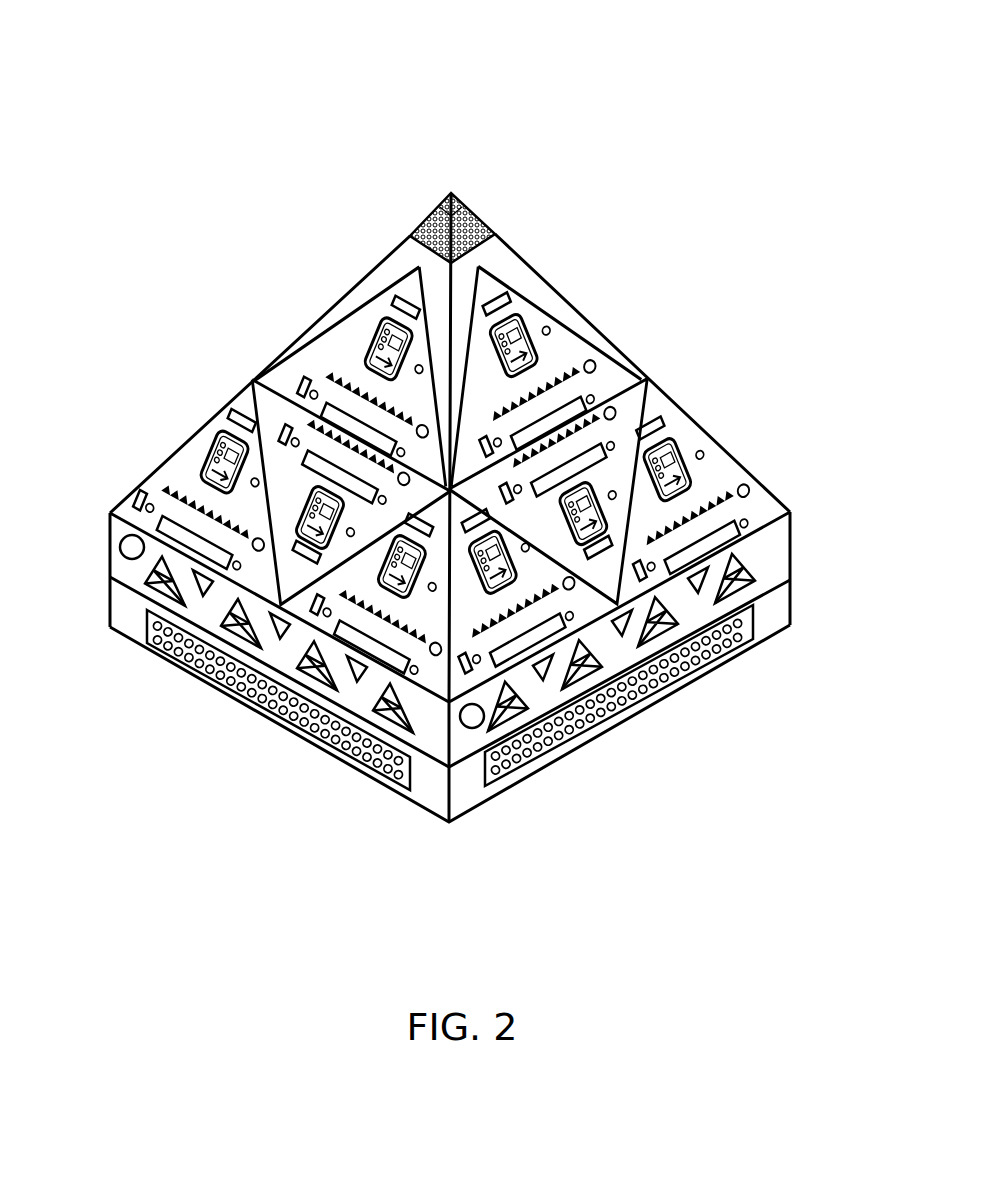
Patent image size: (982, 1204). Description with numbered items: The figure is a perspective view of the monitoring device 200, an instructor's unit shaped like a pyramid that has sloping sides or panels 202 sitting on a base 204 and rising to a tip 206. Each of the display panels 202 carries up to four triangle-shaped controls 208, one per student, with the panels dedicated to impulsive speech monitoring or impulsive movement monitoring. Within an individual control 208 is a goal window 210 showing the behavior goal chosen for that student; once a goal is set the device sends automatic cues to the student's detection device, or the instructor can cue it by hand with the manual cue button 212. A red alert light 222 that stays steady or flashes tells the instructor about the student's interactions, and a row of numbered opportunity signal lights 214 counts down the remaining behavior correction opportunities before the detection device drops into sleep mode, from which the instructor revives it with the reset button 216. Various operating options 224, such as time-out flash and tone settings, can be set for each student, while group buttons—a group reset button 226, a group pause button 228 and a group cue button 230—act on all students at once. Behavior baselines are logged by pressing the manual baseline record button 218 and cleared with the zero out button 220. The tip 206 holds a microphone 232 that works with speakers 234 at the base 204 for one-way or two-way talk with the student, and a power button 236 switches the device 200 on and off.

The monitoring device 200 is at (506, 127).
The sides or panels 202 is at (505, 262).
The base 204 is at (465, 792).
The tip 206 is at (449, 193).
The control 208 is at (353, 327).
The goal window 210 is at (531, 345).
The manual cue button 212 is at (550, 332).
The opportunity signal lights 214 is at (574, 381).
The reset button 216 is at (598, 367).
The manual baseline record button 218 is at (318, 393).
The zero out button 220 is at (303, 382).
The red alert light 222 is at (493, 282).
The operating options 224 is at (400, 746).
The group reset button 226 is at (202, 586).
The group pause button 228 is at (277, 631).
The group cue button 230 is at (348, 678).
The microphone 232 is at (468, 213).
The speakers 234 is at (337, 746).
The power button 236 is at (120, 548).